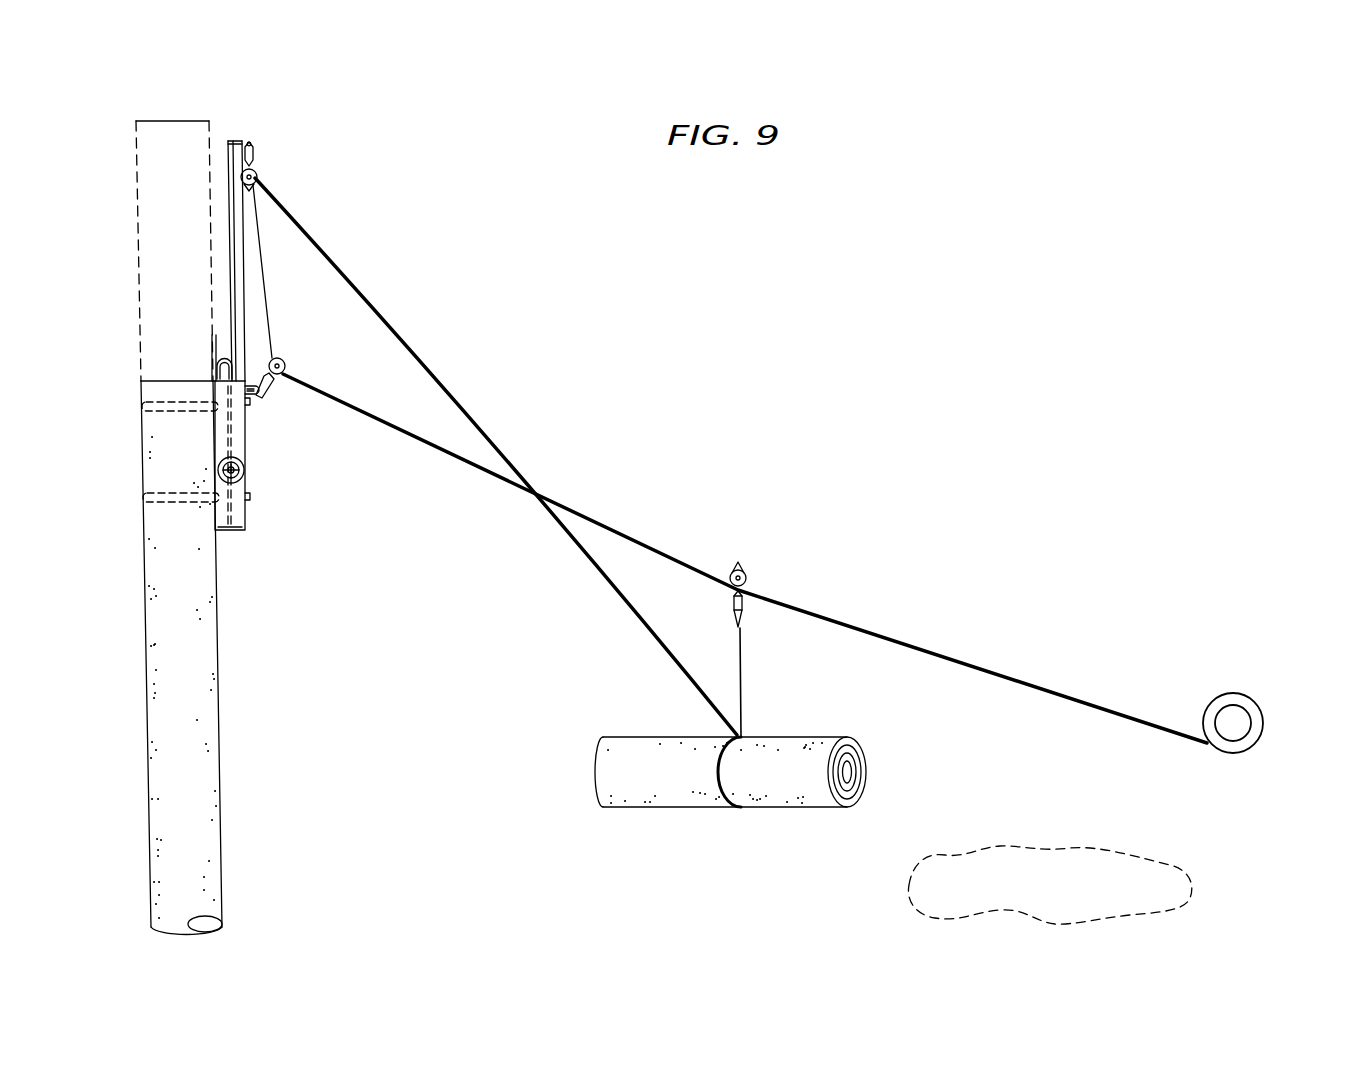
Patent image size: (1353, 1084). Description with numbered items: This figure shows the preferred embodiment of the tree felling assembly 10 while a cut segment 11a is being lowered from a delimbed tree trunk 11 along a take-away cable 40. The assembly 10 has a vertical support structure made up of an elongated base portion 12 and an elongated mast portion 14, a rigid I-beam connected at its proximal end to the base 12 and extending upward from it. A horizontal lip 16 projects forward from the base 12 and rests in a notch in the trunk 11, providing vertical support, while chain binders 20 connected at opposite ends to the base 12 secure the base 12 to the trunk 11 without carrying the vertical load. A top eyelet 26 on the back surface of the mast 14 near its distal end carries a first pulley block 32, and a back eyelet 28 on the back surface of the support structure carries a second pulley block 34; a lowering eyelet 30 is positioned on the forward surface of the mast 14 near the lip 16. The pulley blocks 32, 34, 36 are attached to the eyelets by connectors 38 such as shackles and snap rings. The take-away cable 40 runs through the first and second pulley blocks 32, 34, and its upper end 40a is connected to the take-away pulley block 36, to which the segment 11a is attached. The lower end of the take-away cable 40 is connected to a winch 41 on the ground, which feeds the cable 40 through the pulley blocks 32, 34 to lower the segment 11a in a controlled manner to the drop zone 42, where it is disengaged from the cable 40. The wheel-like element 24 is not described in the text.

The tree felling assembly 10 is at (346, 212).
The tree trunk 11 is at (148, 652).
The segment 11a is at (135, 245).
The base portion 12 is at (246, 482).
The mast portion 14 is at (228, 139).
The horizontal lip 16 is at (215, 377).
The chain binder 20 is at (150, 412).
The pulley 24 is at (245, 470).
The top eyelet 26 is at (243, 140).
The back eyelet 28 is at (260, 383).
The lowering eyelet 30 is at (228, 360).
The first pulley block 32 is at (253, 190).
The second pulley block 34 is at (285, 364).
The take-away pulley block 36 is at (747, 578).
The connectors 38 is at (255, 150).
The take-away cable 40 is at (945, 650).
The upper end of the take-away cable 40a is at (746, 630).
The winch 41 is at (1232, 693).
The drop zone 42 is at (1030, 905).